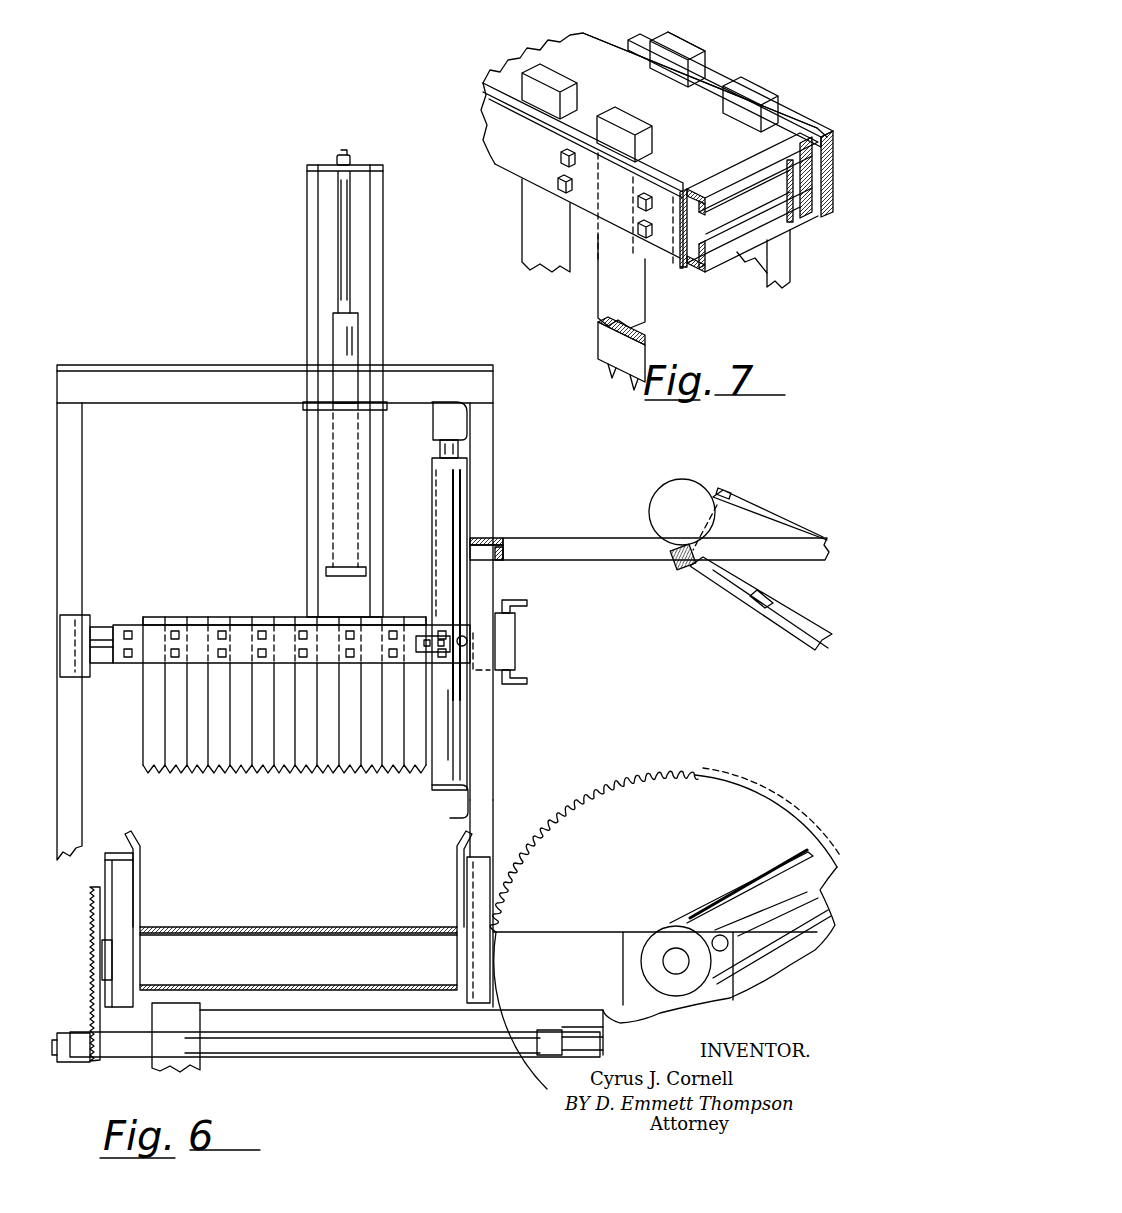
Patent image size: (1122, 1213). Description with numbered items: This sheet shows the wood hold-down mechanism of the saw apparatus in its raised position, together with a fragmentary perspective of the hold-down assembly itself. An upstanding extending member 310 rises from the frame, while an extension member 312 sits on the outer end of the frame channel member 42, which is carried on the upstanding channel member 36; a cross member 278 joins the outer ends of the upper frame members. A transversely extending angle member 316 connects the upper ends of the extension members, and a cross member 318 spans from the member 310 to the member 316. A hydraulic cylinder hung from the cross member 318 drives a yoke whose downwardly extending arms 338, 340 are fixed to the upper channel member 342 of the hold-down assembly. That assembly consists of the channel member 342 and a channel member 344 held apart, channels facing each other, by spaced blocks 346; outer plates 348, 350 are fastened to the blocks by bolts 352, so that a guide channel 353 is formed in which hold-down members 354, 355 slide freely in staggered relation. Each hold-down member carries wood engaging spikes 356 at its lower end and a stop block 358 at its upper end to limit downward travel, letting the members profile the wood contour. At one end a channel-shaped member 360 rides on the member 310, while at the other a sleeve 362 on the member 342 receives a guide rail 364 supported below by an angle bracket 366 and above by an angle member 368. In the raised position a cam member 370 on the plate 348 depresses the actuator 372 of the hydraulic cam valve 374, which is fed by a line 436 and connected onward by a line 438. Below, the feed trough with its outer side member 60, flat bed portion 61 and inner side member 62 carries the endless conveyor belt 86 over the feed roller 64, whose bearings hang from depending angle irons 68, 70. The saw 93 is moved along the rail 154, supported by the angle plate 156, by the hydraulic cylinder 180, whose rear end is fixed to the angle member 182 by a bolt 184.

In FIG. 6, the upstanding channel member 36 is at (488, 822).
In FIG. 6, the channel member 42 is at (565, 543).
In FIG. 6, the outer upstanding side member 60 is at (140, 880).
In FIG. 6, the flat bed portion 61 is at (245, 936).
In FIG. 6, the inner side member 62 is at (455, 860).
In FIG. 6, the feed roller 64 is at (298, 959).
In FIG. 6, the depending angle iron 68 is at (482, 930).
In FIG. 6, the depending angle iron 70 is at (121, 930).
In FIG. 6, the endless conveyor belt 86 is at (240, 927).
In FIG. 6, the saw 93 is at (665, 928).
In FIG. 6, the rail 154 is at (278, 1020).
In FIG. 6, the angle plate 156 is at (192, 1013).
In FIG. 6, the hydraulic cylinder 180 is at (243, 1052).
In FIG. 6, the angle member 182 is at (73, 1065).
In FIG. 6, the bolt 184 is at (58, 1040).
In FIG. 6, the cross member 278 is at (510, 537).
In FIG. 6, the upstanding extending member 310 is at (73, 518).
In FIG. 6, the extension member 312 is at (488, 475).
In FIG. 6, the transversely extending angle member 316 is at (440, 413).
In FIG. 6, the cross member 318 is at (208, 375).
In FIG. 6, the downwardly extending arm 338 is at (315, 257).
In FIG. 6, the downwardly extending arm 340 is at (377, 303).
In FIG. 7, the channel member 342 is at (654, 98).
In FIG. 7, the channel member 344 is at (702, 268).
In FIG. 7, the blocks 346 is at (788, 145).
In FIG. 6, the outer plate 348 is at (197, 633).
In FIG. 7, the outer plate 348 is at (590, 210).
In FIG. 7, the outer plate 350 is at (797, 127).
In FIG. 6, the bolts 352 is at (222, 633).
In FIG. 7, the bolts 352 is at (562, 155).
In FIG. 7, the guide channel 353 is at (757, 180).
In FIG. 6, the hold-down member 354 is at (388, 758).
In FIG. 7, the hold-down member 354 is at (603, 285).
In FIG. 6, the hold-down member 355 is at (417, 758).
In FIG. 7, the hold-down member 355 is at (715, 57).
In FIG. 6, the wood engaging spikes 356 is at (350, 770).
In FIG. 7, the wood engaging spikes 356 is at (615, 377).
In FIG. 7, the stop block 358 is at (655, 70).
In FIG. 6, the channel-shaped member 360 is at (83, 615).
In FIG. 6, the upstanding sleeve 362 is at (442, 520).
In FIG. 6, the guide rail 364 is at (455, 738).
In FIG. 6, the angle bracket 366 is at (447, 792).
In FIG. 6, the angle member 368 is at (465, 427).
In FIG. 6, the cam member 370 is at (432, 638).
In FIG. 6, the actuator 372 is at (463, 638).
In FIG. 6, the hydraulic cam valve 374 is at (515, 637).
In FIG. 6, the feed line 436 is at (527, 600).
In FIG. 6, the line 438 is at (528, 680).